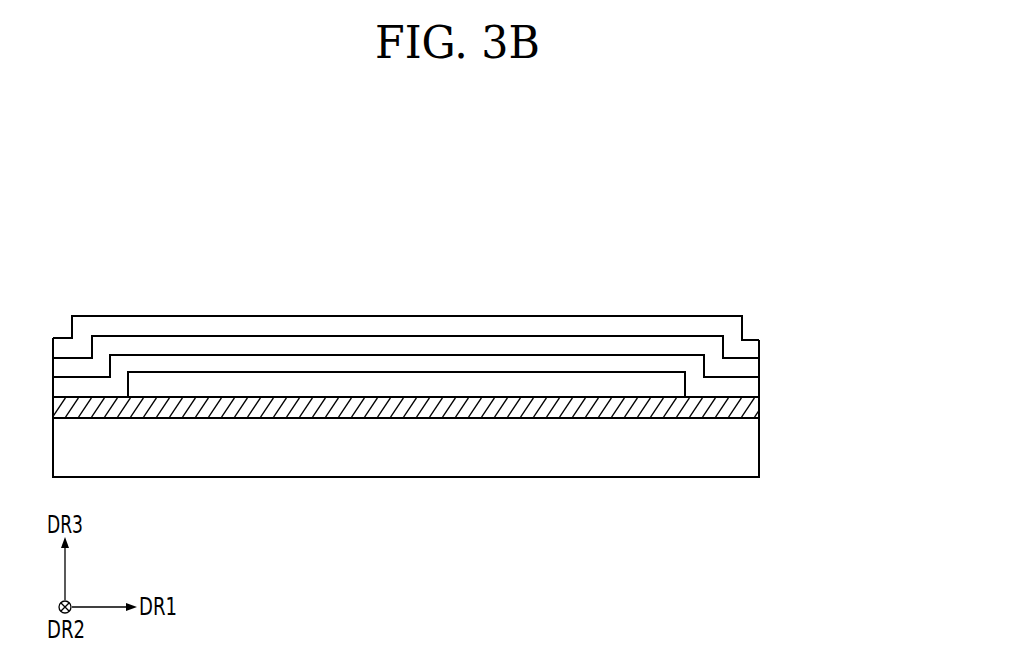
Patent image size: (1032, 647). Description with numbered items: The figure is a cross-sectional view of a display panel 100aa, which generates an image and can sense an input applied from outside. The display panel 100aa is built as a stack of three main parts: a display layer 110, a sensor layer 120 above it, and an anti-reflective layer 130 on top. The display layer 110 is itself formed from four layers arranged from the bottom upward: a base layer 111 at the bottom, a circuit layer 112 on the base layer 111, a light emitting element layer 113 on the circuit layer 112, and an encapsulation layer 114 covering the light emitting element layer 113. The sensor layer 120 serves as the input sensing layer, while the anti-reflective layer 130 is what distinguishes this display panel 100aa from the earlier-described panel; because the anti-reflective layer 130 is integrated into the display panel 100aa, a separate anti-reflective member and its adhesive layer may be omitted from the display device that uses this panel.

The display panel 100aa is at (688, 247).
The display layer 110 is at (479, 407).
The base layer 111 is at (845, 355).
The circuit layer 112 is at (750, 408).
The light emitting element layer 113 is at (671, 388).
The encapsulation layer 114 is at (695, 370).
The sensor layer 120 is at (713, 350).
The anti-reflective layer 130 is at (737, 323).